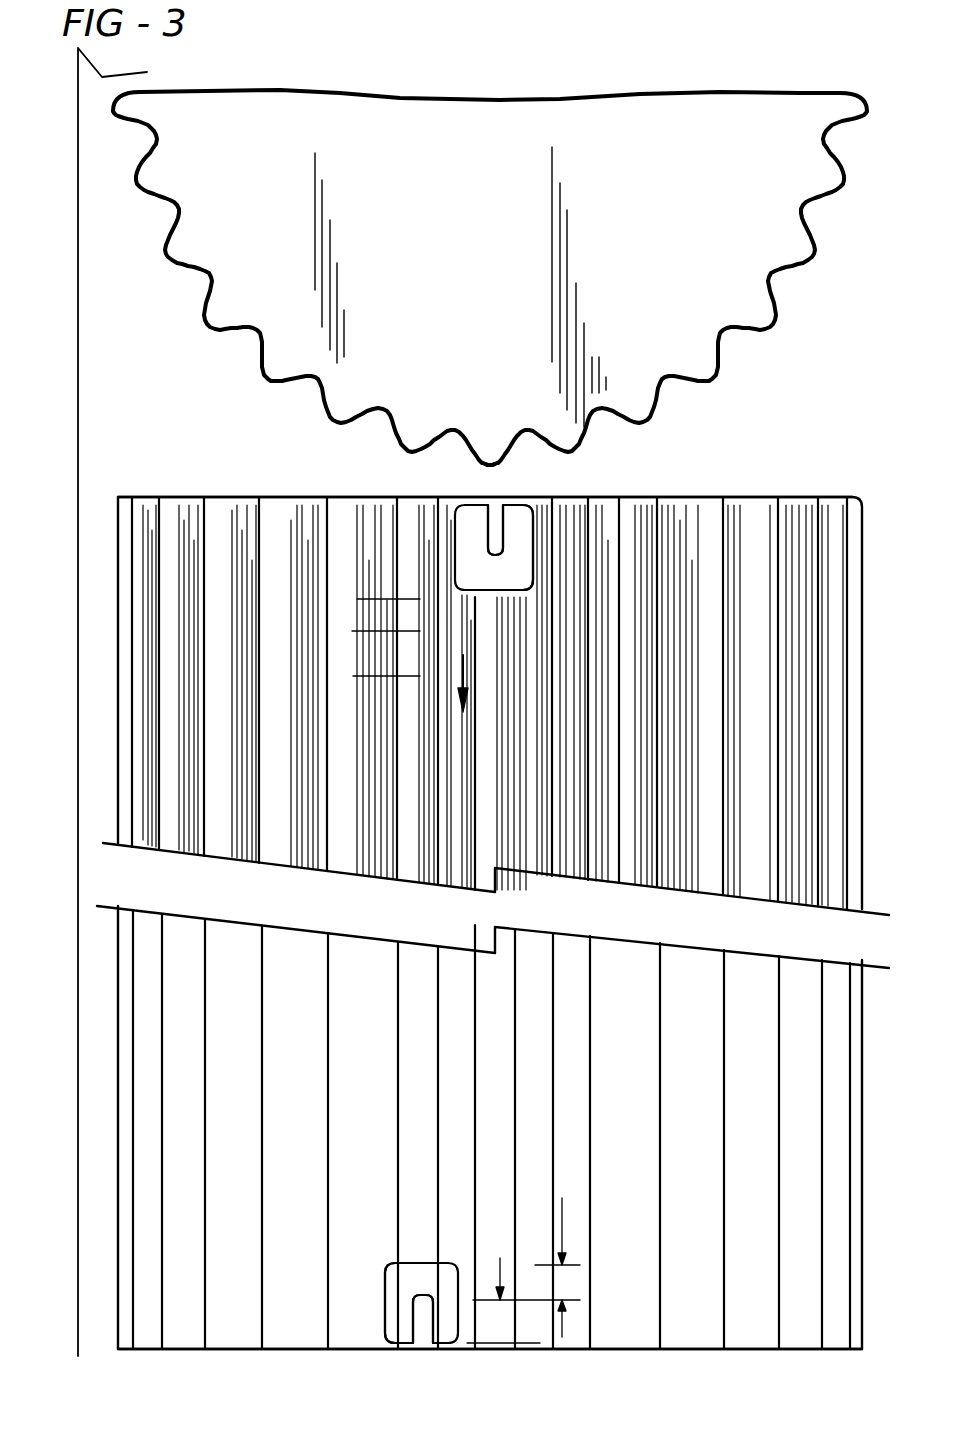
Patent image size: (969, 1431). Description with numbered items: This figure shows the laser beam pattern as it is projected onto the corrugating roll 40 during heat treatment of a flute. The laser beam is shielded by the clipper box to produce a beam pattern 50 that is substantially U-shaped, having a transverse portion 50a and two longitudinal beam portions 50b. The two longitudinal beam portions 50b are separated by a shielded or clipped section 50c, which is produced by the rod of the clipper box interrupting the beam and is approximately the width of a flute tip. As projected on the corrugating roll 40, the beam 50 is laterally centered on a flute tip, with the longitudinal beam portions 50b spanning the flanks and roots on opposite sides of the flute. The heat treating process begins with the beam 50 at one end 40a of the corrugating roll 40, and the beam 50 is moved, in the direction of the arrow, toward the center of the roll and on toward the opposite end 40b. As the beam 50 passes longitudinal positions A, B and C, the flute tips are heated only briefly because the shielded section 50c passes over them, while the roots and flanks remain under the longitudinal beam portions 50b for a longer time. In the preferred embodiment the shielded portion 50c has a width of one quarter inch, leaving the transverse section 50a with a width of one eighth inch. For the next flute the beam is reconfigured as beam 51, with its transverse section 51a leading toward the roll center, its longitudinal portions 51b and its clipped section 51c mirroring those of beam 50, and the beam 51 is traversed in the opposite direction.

The corrugating roll 40 is at (289, 497).
The one end of the corrugating roll 40a is at (720, 497).
The lower end of belt 40b is at (570, 1352).
The beam pattern 50 is at (446, 556).
The transverse portion 50a is at (482, 578).
The longitudinal beam portions 50b is at (517, 572).
The shielded or clipped section 50c is at (497, 530).
The beam configuration 51 is at (447, 1283).
The lower slot upper edge 51a is at (427, 1277).
The lower slot side portion 51b is at (397, 1282).
The lower slot notch 51c is at (422, 1313).